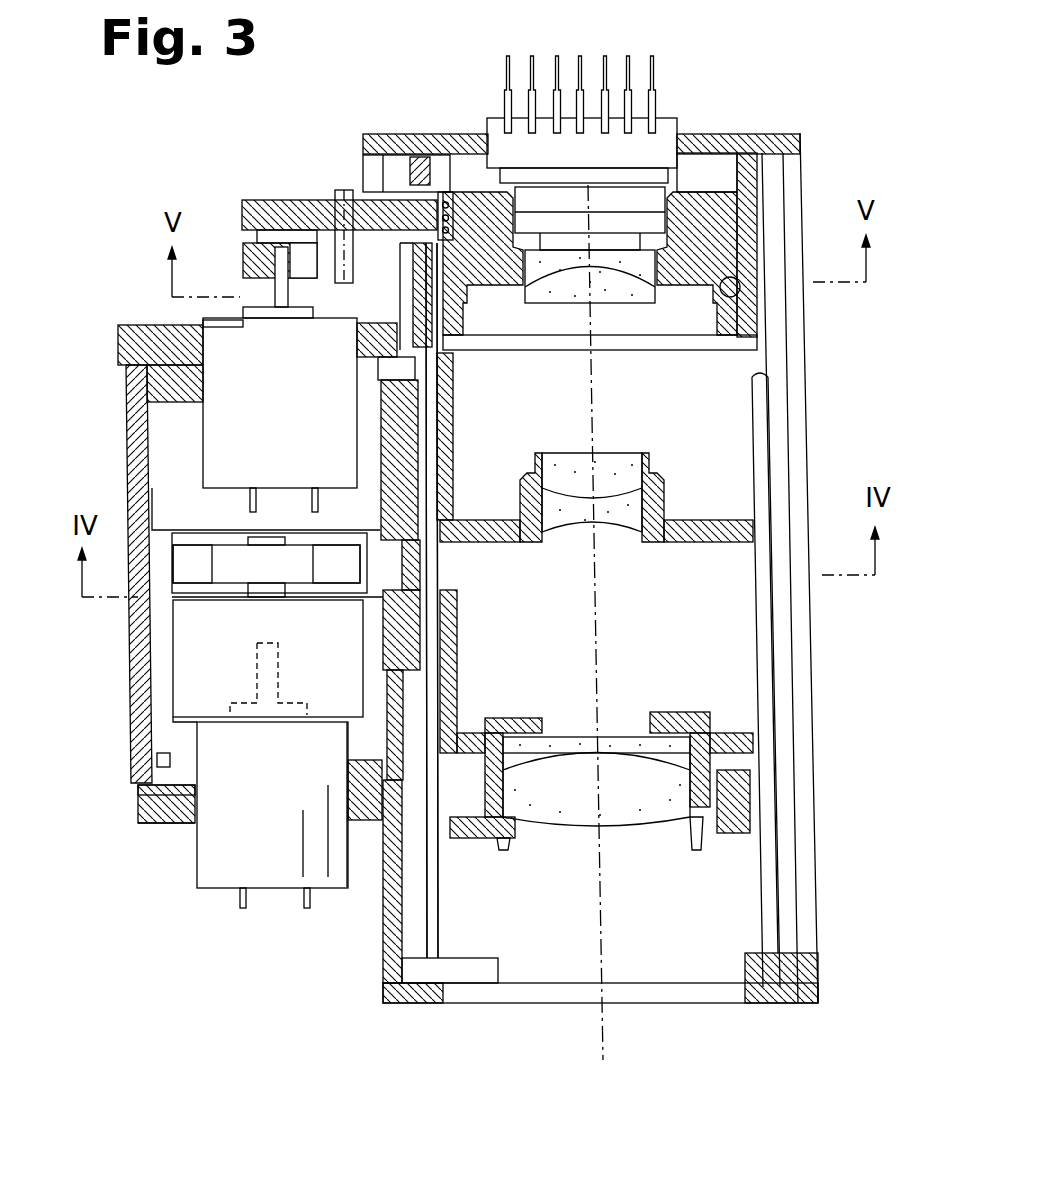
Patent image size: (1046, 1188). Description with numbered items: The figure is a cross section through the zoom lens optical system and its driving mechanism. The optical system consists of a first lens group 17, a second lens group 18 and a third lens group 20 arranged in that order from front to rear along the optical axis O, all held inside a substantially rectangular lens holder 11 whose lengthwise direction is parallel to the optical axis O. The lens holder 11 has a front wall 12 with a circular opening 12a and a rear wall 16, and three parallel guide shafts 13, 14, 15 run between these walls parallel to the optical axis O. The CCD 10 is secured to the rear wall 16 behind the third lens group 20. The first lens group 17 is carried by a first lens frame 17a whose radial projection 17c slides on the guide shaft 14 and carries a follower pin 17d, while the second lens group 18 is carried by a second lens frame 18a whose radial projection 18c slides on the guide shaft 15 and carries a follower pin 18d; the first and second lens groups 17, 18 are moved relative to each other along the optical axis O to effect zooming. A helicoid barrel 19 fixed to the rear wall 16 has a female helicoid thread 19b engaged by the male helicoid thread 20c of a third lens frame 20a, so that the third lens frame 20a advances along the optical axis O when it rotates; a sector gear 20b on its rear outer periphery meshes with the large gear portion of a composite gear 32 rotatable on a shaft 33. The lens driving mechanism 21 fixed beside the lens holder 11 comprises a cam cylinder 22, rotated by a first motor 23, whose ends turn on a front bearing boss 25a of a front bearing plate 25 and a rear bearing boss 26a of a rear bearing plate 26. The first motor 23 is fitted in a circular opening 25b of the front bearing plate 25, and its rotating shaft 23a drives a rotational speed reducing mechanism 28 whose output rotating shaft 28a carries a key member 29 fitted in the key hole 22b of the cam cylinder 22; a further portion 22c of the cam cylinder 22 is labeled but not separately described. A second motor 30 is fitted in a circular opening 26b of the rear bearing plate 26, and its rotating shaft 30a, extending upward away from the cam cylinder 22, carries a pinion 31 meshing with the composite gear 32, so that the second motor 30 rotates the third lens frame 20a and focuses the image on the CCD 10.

The CCD 10 is at (656, 140).
The lens holder 11 is at (808, 770).
The front wall 12 is at (760, 995).
The circular opening 12a is at (532, 995).
The guide shaft 13 is at (776, 896).
The guide shaft 14 is at (386, 661).
The guide shaft 15 is at (397, 958).
The rear wall 16 is at (788, 143).
The first lens group 17 is at (654, 744).
The first lens frame 17a is at (690, 830).
The radial projection 17c is at (460, 730).
The follower pin 17d is at (452, 642).
The second lens group 18 is at (650, 476).
The second lens frame 18a is at (658, 545).
The radial projection 18c is at (462, 515).
The follower pin 18d is at (450, 418).
The helicoid barrel 19 is at (757, 217).
The female helicoid thread 19b is at (757, 296).
The third lens group 20 is at (620, 318).
The third lens frame 20a is at (700, 147).
The sector gear 20b is at (447, 190).
The male helicoid thread 20c is at (429, 312).
The lens driving mechanism 21 is at (136, 288).
The cam cylinder 22 is at (133, 438).
The key hole 22b is at (150, 575).
The bracket side plate 22c is at (333, 724).
The first motor 23 is at (210, 830).
The rotating shaft 23a is at (167, 757).
The front bearing plate 25 is at (137, 813).
The front bearing boss 25a is at (140, 795).
The circular opening 25b is at (197, 830).
The rear bearing plate 26 is at (118, 343).
The rear bearing boss 26a is at (167, 395).
The circular opening 26b is at (218, 336).
The rotational speed reducing mechanism 28 is at (188, 677).
The output rotating shaft 28a is at (258, 640).
The key member 29 is at (237, 563).
The second motor 30 is at (237, 370).
The rotating shaft 30a is at (282, 245).
The pinion 31 is at (248, 256).
The composite gear 32 is at (303, 198).
The shaft 33 is at (342, 188).
The optical axis O is at (602, 947).